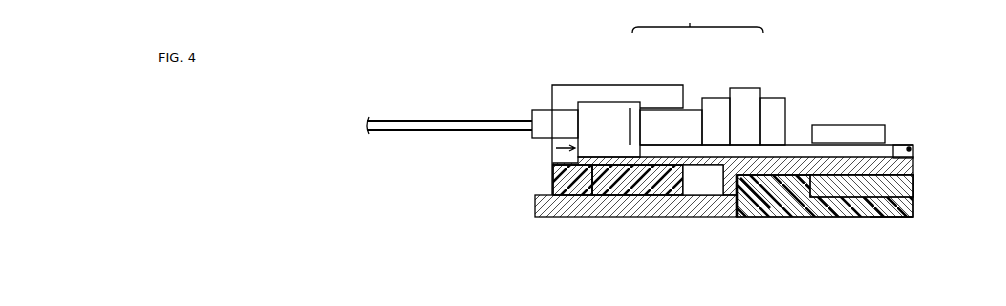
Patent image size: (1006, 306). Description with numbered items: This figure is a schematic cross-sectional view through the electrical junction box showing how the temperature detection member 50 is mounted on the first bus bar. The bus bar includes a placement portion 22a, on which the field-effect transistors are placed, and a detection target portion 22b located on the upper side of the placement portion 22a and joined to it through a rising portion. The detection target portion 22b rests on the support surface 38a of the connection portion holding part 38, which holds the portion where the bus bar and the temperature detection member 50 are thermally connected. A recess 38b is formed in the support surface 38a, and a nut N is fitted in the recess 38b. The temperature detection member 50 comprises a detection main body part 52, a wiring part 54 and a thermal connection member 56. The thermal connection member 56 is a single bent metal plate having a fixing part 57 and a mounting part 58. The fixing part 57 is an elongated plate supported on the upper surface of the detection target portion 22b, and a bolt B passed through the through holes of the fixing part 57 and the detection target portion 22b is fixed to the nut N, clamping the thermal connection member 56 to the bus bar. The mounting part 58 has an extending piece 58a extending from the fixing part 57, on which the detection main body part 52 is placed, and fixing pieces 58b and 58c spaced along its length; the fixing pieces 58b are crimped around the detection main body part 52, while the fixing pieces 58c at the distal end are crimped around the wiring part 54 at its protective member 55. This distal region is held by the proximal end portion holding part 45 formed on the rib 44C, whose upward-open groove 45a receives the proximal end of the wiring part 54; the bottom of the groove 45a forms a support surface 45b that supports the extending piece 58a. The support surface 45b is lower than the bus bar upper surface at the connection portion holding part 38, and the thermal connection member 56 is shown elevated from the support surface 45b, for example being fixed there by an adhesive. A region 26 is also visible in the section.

The proximal end portion holding part 45 is at (563, 83).
The groove 45a is at (615, 92).
The support surface 45b is at (590, 218).
The temperature detection member 50 is at (592, 100).
The protective member 55 is at (542, 117).
The wiring part 54 is at (422, 131).
The thermal connection member 56 is at (552, 147).
The mounting part 58 is at (697, 20).
The extending piece 58a is at (692, 150).
The fixing pieces 58b is at (742, 97).
The fixing pieces 58c is at (627, 112).
The detection main body part 52 is at (786, 110).
The bolt B is at (848, 132).
The fixing part 57 is at (893, 145).
The placement portion 22a is at (668, 218).
The detection target portion 22b is at (915, 170).
The rib 44C is at (630, 218).
The opening 26 is at (704, 218).
The connection portion holding part 38 is at (800, 218).
The support surface 38a is at (767, 218).
The recess 38b is at (915, 192).
The nut N is at (875, 218).